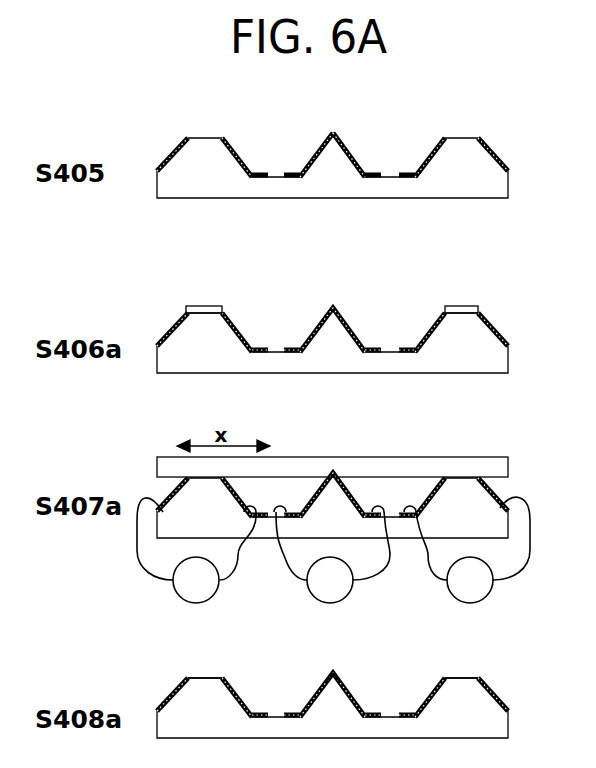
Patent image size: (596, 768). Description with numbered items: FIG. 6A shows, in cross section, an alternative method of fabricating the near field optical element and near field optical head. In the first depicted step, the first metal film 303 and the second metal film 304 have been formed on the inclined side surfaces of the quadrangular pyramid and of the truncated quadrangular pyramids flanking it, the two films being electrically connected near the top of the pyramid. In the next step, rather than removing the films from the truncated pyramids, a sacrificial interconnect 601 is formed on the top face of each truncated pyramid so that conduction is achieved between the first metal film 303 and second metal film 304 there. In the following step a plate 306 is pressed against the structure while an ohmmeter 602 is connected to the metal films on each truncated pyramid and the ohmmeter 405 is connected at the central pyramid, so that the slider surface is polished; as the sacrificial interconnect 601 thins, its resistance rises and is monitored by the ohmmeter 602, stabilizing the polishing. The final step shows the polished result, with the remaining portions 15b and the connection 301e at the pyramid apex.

The first metal film 303 is at (170, 157).
The second metal film 304 is at (255, 119).
The sacrificial interconnect 601 is at (206, 307).
The pressing substrate 306 is at (527, 440).
The ohmmeter 602 is at (212, 597).
The ohmmeter 405 is at (346, 597).
The electrode 15b is at (200, 677).
The ridge portion 301e is at (336, 676).